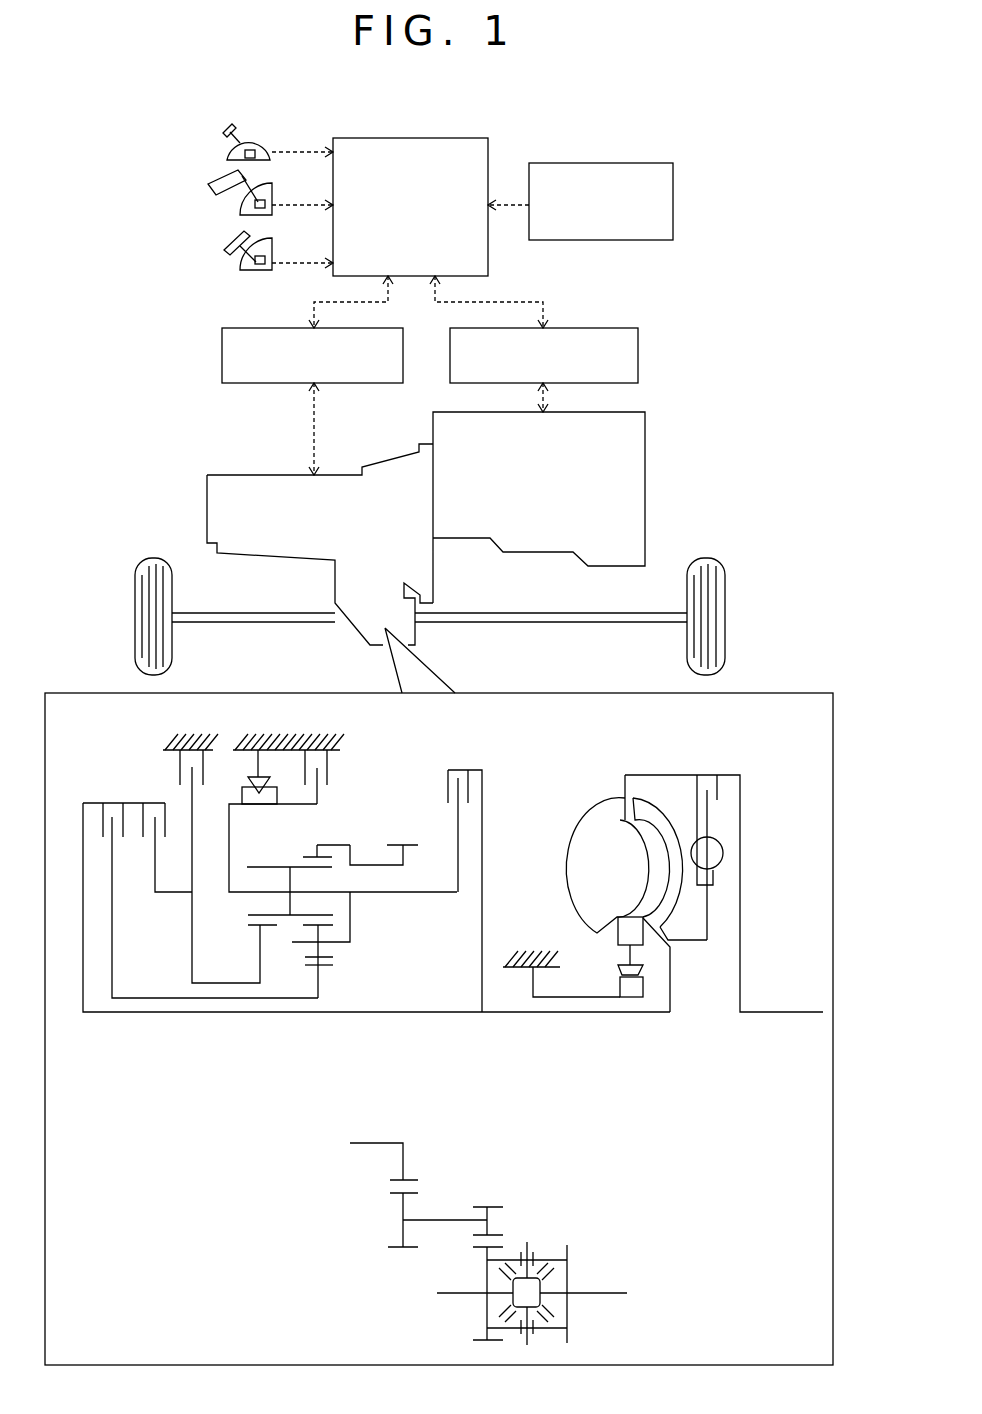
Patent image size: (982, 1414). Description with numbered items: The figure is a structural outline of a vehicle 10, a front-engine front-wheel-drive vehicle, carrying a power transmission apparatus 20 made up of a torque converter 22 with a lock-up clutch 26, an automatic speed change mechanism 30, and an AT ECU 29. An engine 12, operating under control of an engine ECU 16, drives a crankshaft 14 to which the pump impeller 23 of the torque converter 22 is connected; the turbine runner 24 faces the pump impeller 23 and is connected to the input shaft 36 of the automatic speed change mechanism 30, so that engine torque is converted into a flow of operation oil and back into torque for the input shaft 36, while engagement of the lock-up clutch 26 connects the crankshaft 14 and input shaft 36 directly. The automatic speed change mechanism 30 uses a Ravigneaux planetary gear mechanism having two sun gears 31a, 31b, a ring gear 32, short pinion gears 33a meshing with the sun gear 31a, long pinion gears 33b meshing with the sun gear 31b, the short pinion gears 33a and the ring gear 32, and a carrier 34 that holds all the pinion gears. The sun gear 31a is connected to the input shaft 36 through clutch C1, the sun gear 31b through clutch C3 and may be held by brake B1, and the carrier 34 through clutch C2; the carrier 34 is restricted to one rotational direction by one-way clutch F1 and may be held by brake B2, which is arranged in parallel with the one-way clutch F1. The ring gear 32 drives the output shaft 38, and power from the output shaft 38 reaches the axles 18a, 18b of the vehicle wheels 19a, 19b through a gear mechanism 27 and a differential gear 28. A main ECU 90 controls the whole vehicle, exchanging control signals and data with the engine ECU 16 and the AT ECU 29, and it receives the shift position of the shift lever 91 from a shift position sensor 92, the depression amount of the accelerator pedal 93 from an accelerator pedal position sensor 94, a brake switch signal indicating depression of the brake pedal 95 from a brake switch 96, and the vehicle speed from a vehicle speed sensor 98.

The vehicle 10 is at (306, 102).
The engine 12 is at (645, 472).
The crankshaft 14 is at (770, 1013).
The engine ECU 16 is at (640, 355).
The axle 18a is at (555, 612).
The axle 18b is at (263, 612).
The vehicle wheel 19a is at (725, 618).
The vehicle wheel 19b is at (135, 616).
The power transmission apparatus 20 is at (207, 506).
The torque converter 22 is at (612, 795).
The pump impeller 23 is at (580, 840).
The turbine runner 24 is at (660, 812).
The lock-up clutch 26 is at (722, 845).
The gear mechanism 27 is at (434, 1205).
The differential gear 28 is at (545, 1232).
The AT ECU 29 is at (258, 328).
The automatic speed change mechanism 30 is at (497, 793).
The sun gear 31a is at (325, 970).
The sun gear 31b is at (256, 931).
The ring gear 32 is at (309, 855).
The short pinion gear 33a is at (333, 961).
The long pinion gear 33b is at (300, 863).
The carrier 34 is at (357, 895).
The input shaft 36 is at (560, 1013).
The output shaft 38 is at (367, 863).
The main ECU 90 is at (470, 138).
The shift lever 91 is at (228, 134).
The shift position sensor 92 is at (245, 155).
The accelerator pedal 93 is at (226, 188).
The accelerator pedal position sensor 94 is at (255, 204).
The brake pedal 95 is at (233, 245).
The brake switch 96 is at (255, 260).
The vehicle speed sensor 98 is at (673, 203).
The brake B1 is at (178, 768).
The brake B2 is at (333, 752).
The clutch C1 is at (104, 808).
The clutch C2 is at (462, 768).
The clutch C3 is at (151, 808).
The one-way clutch F1 is at (247, 780).